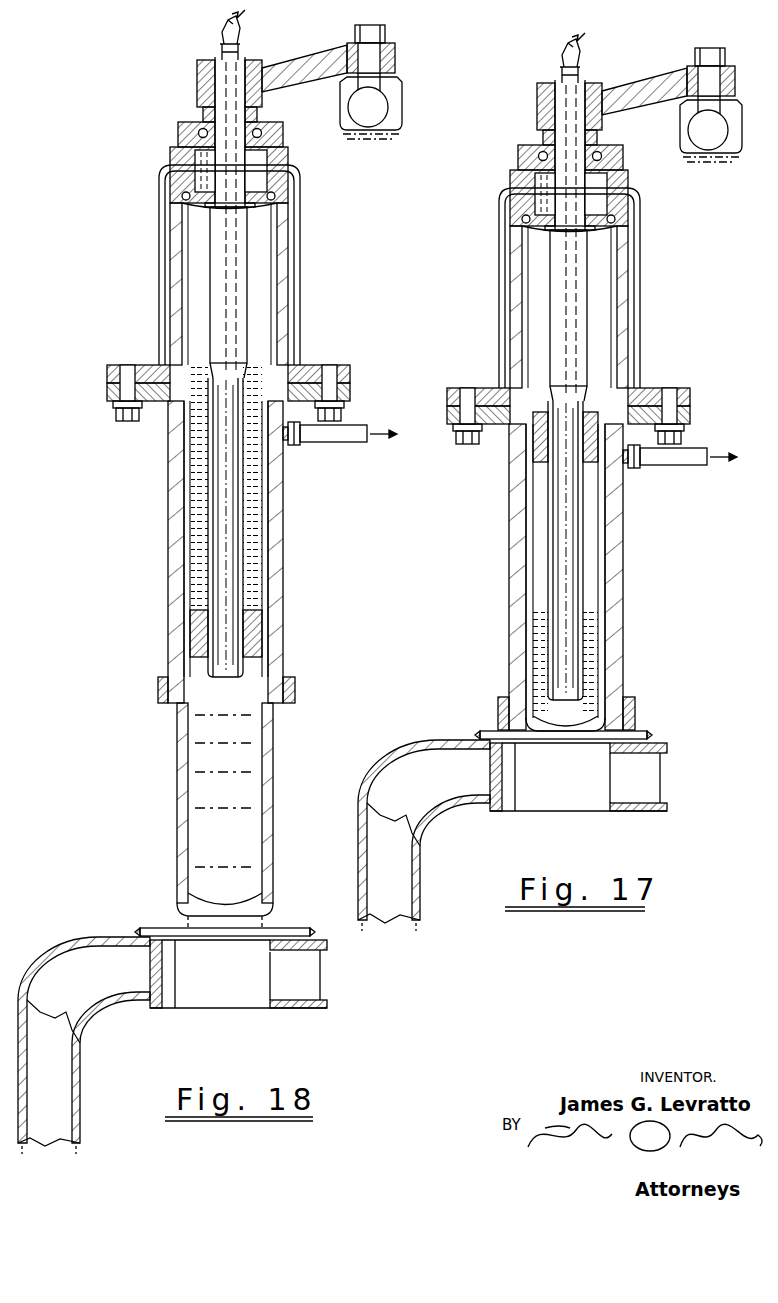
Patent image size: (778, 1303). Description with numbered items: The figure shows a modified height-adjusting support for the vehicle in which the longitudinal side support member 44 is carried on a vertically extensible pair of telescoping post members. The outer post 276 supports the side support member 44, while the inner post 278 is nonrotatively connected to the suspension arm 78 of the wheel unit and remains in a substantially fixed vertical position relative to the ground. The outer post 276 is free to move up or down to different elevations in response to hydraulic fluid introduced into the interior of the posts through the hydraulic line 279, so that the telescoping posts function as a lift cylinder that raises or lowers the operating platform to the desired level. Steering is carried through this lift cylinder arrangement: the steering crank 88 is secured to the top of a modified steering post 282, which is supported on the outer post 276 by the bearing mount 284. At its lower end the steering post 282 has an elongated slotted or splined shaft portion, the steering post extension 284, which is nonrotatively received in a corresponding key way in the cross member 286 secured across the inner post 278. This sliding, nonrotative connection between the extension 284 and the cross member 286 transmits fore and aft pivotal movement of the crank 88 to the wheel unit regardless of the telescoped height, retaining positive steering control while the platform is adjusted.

In FIG. 18, the side support member 44 is at (162, 264).
In FIG. 17, the side support member 44 is at (500, 276).
In FIG. 18, the suspension arm 78 is at (86, 938).
In FIG. 17, the suspension arm 78 is at (436, 740).
In FIG. 18, the steering crank 88 is at (318, 57).
In FIG. 17, the steering crank 88 is at (658, 70).
In FIG. 18, the outer post 276 is at (280, 567).
In FIG. 17, the outer post 276 is at (620, 580).
In FIG. 18, the inner post 278 is at (180, 815).
In FIG. 17, the inner post 278 is at (530, 566).
In FIG. 18, the hydraulic line 279 is at (345, 436).
In FIG. 17, the hydraulic line 279 is at (683, 458).
In FIG. 18, the steering post 282 is at (240, 308).
In FIG. 17, the steering post 282 is at (582, 307).
In FIG. 18, the bearing mount 284 is at (179, 123).
In FIG. 17, the bearing mount 284 is at (521, 146).
In FIG. 18, the cross member 286 is at (190, 628).
In FIG. 17, the cross member 286 is at (528, 443).